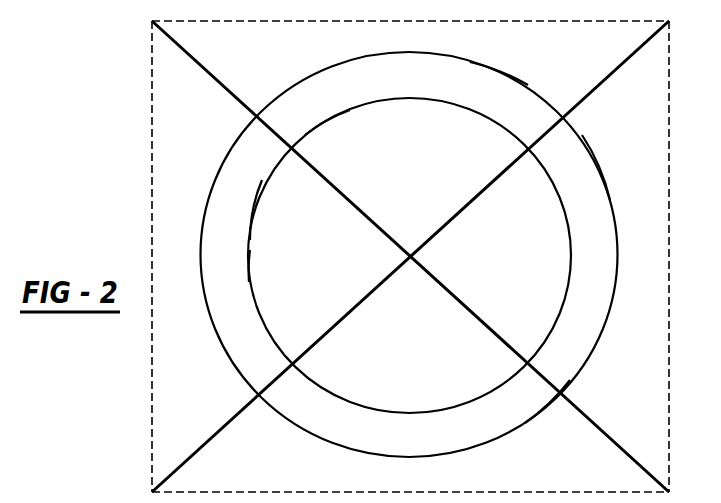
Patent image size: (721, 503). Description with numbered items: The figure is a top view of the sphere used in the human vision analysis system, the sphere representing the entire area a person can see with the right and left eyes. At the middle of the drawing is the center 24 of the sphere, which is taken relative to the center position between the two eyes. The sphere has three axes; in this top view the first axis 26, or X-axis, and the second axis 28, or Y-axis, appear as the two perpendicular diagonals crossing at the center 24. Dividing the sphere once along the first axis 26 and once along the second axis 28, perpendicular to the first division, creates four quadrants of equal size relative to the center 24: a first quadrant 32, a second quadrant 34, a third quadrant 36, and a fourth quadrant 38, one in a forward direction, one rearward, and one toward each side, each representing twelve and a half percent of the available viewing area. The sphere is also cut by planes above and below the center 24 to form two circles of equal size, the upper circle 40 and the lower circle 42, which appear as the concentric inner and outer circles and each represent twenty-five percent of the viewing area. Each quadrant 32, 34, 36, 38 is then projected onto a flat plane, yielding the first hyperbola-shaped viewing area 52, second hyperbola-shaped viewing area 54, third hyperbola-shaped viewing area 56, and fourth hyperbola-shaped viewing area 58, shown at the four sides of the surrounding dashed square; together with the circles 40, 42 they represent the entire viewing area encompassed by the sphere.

The center 24 is at (410, 258).
The first axis 26 is at (330, 335).
The second axis 28 is at (279, 135).
The first quadrant 32 is at (237, 140).
The second quadrant 34 is at (528, 85).
The third quadrant 36 is at (582, 135).
The fourth quadrant 38 is at (525, 423).
The upper circle 40 is at (250, 243).
The lower circle 42 is at (249, 284).
The first hyperbola-shaped viewing area 52 is at (152, 362).
The second hyperbola-shaped viewing area 54 is at (352, 22).
The third hyperbola-shaped viewing area 56 is at (668, 277).
The fourth hyperbola-shaped viewing area 58 is at (294, 492).